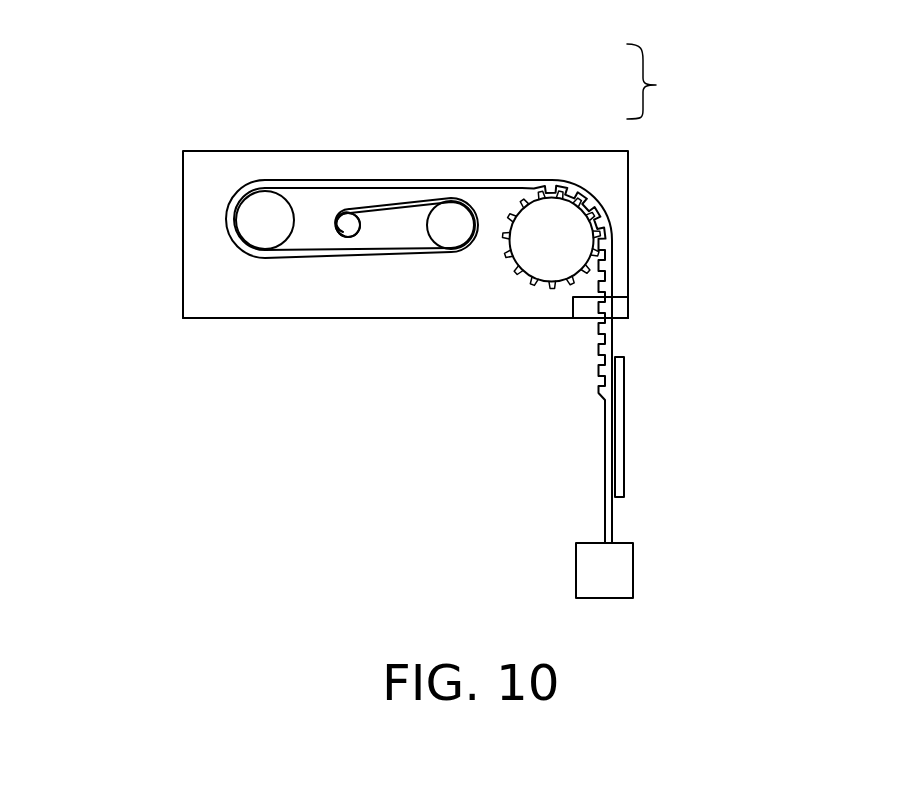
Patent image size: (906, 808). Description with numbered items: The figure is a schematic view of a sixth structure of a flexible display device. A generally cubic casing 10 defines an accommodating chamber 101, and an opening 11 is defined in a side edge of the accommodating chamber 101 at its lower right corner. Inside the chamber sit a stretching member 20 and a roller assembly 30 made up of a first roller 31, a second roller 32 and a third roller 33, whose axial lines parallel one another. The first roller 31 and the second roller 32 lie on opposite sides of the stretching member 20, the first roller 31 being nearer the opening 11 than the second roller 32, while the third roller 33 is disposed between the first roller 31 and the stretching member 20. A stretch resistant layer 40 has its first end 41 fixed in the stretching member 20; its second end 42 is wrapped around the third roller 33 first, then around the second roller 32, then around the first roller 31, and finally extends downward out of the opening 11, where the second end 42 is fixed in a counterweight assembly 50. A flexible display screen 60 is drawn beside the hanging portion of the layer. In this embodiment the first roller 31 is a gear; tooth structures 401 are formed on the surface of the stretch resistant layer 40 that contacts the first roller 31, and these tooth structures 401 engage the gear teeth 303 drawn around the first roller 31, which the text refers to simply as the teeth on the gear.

The casing 10 is at (223, 283).
The accommodating chamber 101 is at (287, 302).
The opening 11 is at (618, 308).
The stretching member 20 is at (351, 229).
The roller assembly 30 is at (464, 151).
The first roller 31 is at (549, 227).
The second roller 32 is at (265, 220).
The third roller 33 is at (450, 226).
The gear teeth 303 is at (600, 258).
The stretch resistant layer 40 is at (607, 447).
The tooth structures 401 is at (596, 393).
The first end 41 is at (349, 227).
The second end 42 is at (613, 542).
The counterweight assembly 50 is at (603, 570).
The flexible display screen 60 is at (617, 432).